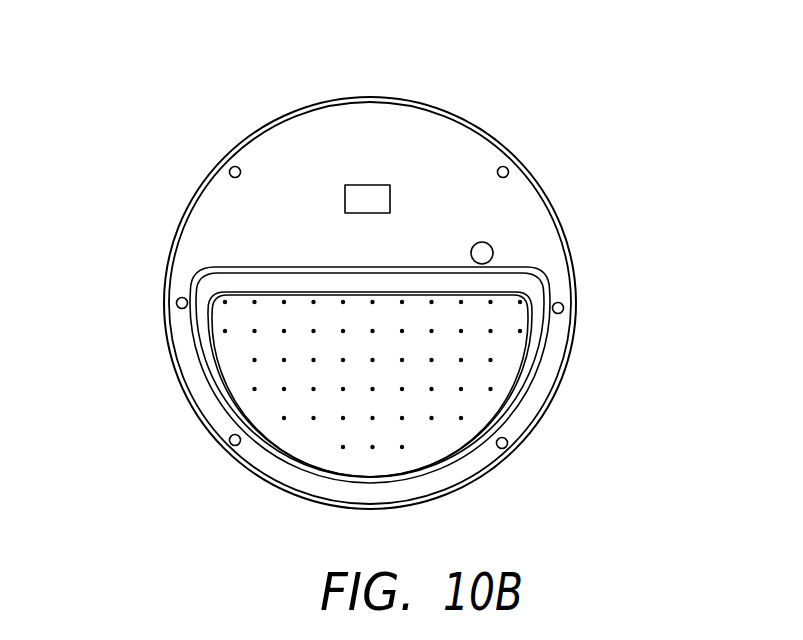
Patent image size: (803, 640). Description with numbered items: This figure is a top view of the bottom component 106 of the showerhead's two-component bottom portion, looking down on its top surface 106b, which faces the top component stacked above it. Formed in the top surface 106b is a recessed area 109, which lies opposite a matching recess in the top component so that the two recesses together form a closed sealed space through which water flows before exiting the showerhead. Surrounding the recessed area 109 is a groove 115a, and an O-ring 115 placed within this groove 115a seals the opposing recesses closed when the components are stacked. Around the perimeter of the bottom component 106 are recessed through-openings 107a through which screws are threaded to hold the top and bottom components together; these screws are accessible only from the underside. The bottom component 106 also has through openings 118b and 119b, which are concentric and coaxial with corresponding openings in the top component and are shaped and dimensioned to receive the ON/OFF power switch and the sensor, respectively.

The bottom component 106 is at (133, 118).
The top surface of the bottom component 106b is at (522, 225).
The recessed through-openings 107a is at (178, 303).
The recessed area 109 is at (502, 368).
The O-ring 115 is at (523, 390).
The groove 115a is at (543, 367).
The through opening 118b is at (481, 243).
The through opening 119b is at (358, 196).